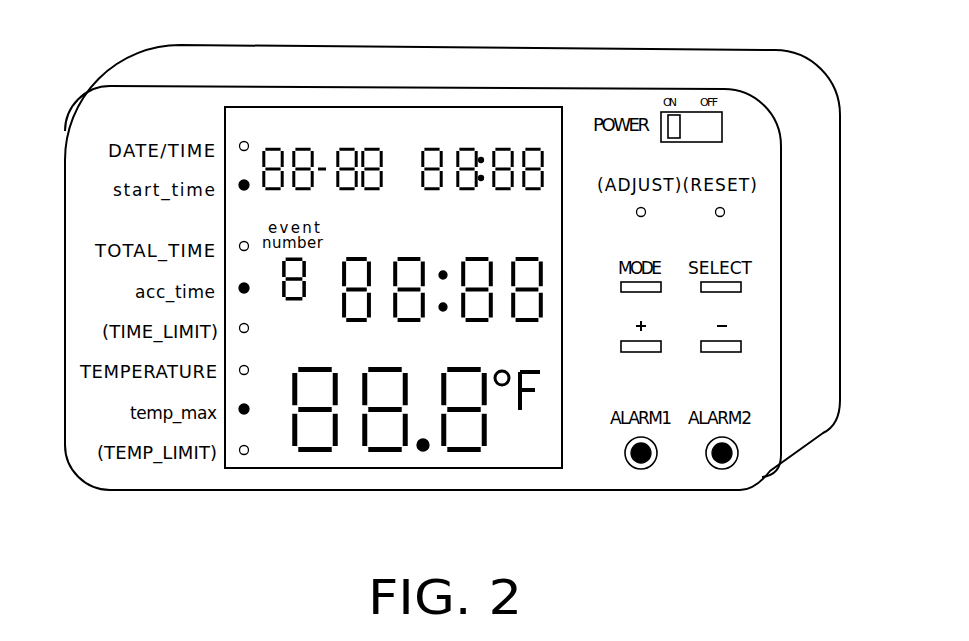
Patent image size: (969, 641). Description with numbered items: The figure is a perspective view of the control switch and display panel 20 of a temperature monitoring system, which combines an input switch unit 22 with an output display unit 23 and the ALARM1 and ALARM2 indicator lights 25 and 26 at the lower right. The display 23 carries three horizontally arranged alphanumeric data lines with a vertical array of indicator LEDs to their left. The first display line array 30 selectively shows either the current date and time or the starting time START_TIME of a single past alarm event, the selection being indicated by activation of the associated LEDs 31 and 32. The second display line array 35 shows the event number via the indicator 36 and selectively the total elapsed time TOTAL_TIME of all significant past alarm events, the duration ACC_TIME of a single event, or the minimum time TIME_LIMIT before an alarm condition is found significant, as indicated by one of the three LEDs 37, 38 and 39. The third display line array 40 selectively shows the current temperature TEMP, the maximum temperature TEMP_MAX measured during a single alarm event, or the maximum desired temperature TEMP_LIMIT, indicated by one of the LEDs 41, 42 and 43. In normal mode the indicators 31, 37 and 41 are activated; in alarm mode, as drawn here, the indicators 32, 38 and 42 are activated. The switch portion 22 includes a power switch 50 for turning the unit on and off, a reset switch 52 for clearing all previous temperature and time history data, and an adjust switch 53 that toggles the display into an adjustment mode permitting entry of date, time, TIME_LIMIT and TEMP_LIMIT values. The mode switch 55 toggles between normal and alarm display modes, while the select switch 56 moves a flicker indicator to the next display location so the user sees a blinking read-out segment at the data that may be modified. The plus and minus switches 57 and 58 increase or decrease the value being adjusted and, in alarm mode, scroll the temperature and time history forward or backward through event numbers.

The control switch and display panel 20 is at (170, 545).
The input switch unit 22 is at (760, 242).
The output display unit 23 is at (513, 440).
The ALARM1 indicator light 25 is at (641, 470).
The ALARM2 indicator light 26 is at (722, 470).
The first display line array 30 is at (433, 150).
The date/time indicator LED 31 is at (243, 141).
The start time indicator LED 32 is at (246, 180).
The second display line array 35 is at (408, 275).
The event number indicator 36 is at (295, 285).
The total time indicator LED 37 is at (239, 245).
The accumulated time indicator LED 38 is at (239, 287).
The time limit indicator LED 39 is at (239, 327).
The third display line array 40 is at (382, 437).
The temperature indicator LED 41 is at (242, 376).
The maximum temperature indicator LED 42 is at (249, 414).
The temperature limit indicator LED 43 is at (246, 456).
The power switch 50 is at (683, 120).
The reset switch 52 is at (636, 214).
The adjust switch 53 is at (725, 212).
The mode switch 55 is at (640, 289).
The select switch 56 is at (720, 288).
The "+" switch 57 is at (640, 349).
The "−" switch 58 is at (720, 347).